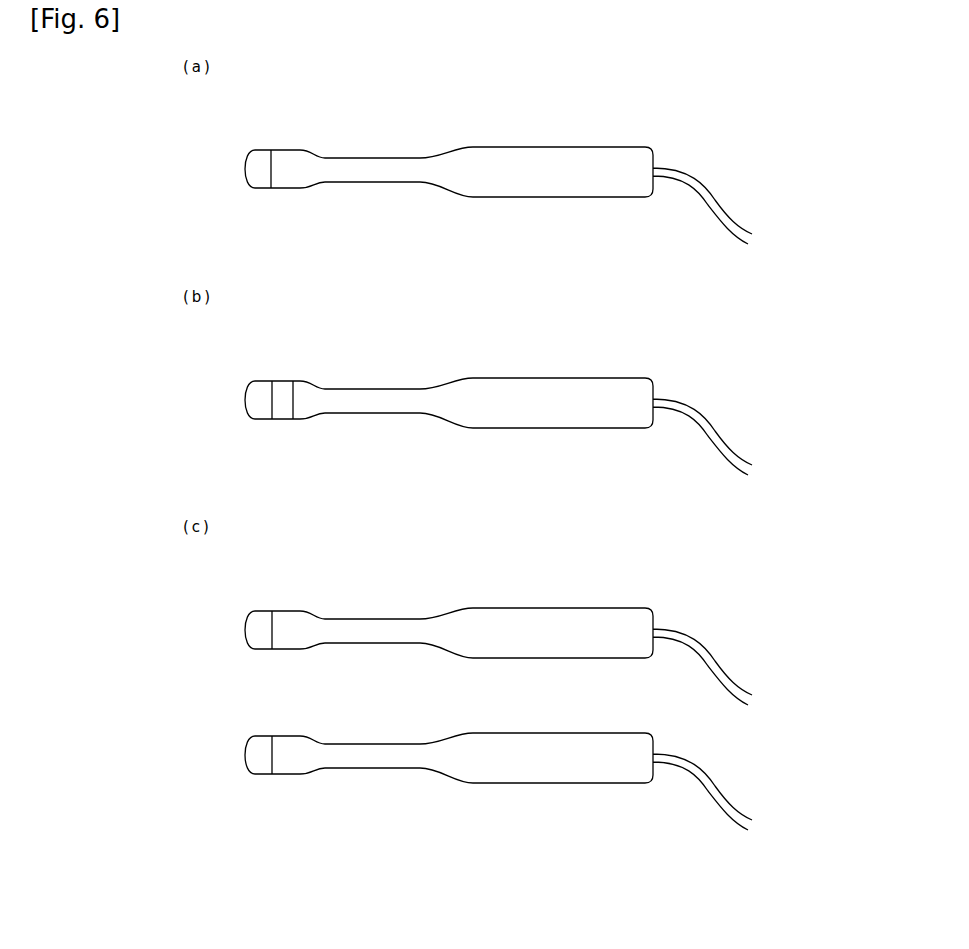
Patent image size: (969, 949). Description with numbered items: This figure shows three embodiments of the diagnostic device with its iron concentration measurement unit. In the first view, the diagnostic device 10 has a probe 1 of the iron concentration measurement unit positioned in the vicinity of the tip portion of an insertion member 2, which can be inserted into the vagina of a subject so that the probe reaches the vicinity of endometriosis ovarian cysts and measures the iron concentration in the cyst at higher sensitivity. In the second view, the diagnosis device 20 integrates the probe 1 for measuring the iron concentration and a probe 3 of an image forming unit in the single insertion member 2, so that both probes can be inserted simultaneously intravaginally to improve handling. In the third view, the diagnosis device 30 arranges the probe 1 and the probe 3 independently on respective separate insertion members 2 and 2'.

The probe of iron concentration measurement unit 1 is at (253, 165).
The insertion member 2 is at (386, 389).
The insertion member 2' is at (386, 744).
The probe for image forming part 3 is at (285, 387).
The diagnostic device 10 is at (595, 112).
The diagnostic device 20 is at (595, 342).
The diagnostic device 30 is at (595, 572).